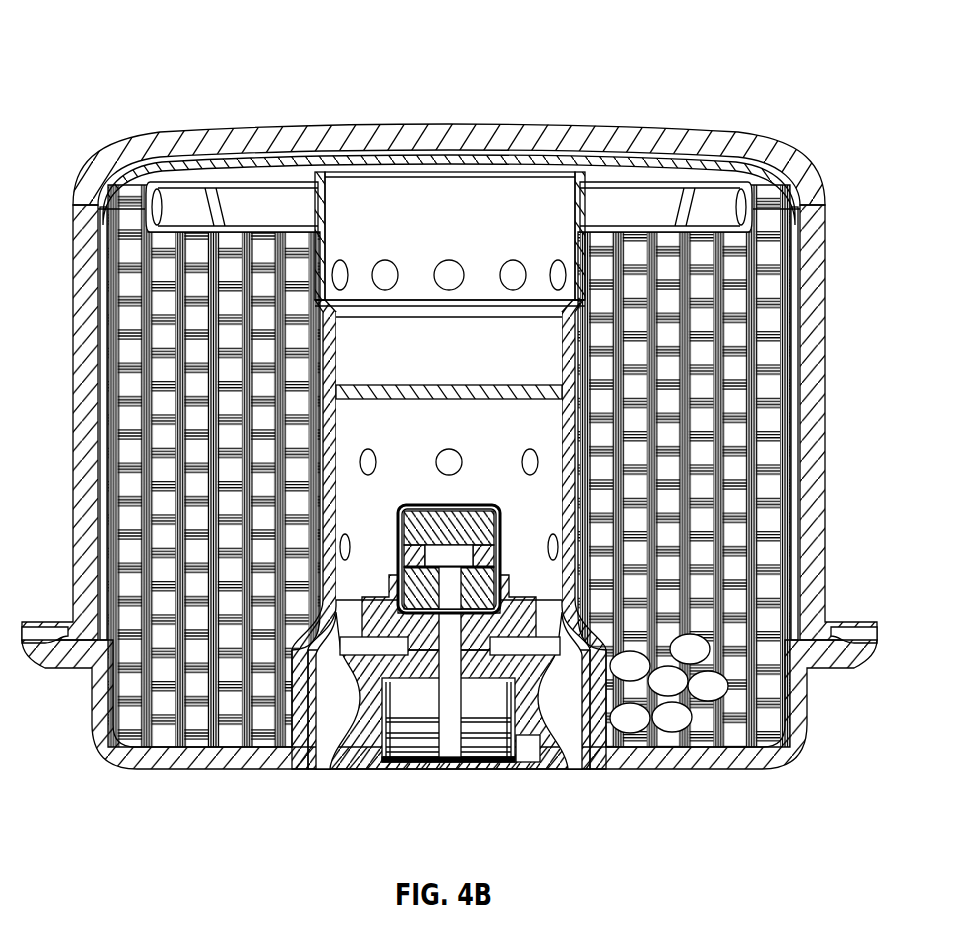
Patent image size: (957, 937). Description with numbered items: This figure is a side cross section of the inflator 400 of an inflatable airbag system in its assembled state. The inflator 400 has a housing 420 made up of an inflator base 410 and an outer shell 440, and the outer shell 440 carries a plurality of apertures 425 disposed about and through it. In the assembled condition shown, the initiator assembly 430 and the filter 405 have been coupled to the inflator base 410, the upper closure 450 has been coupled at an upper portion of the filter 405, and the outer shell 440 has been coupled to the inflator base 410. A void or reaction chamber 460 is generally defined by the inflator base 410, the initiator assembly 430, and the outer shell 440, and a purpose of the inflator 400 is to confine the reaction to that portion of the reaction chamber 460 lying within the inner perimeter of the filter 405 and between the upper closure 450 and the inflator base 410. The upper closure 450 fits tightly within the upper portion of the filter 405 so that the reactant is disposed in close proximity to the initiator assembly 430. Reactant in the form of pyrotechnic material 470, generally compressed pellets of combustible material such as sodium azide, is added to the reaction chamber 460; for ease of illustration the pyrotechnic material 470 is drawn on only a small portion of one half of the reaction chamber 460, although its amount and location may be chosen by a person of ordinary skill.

The inflator 400 is at (119, 45).
The filter 405 is at (783, 313).
The inflator base 410 is at (808, 702).
The housing 420 is at (663, 128).
The apertures 425 is at (820, 410).
The initiator assembly 430 is at (462, 782).
The outer shell 440 is at (258, 128).
The upper closure 450 is at (420, 160).
The reaction chamber 460 is at (227, 250).
The pyrotechnic material 470 is at (688, 742).